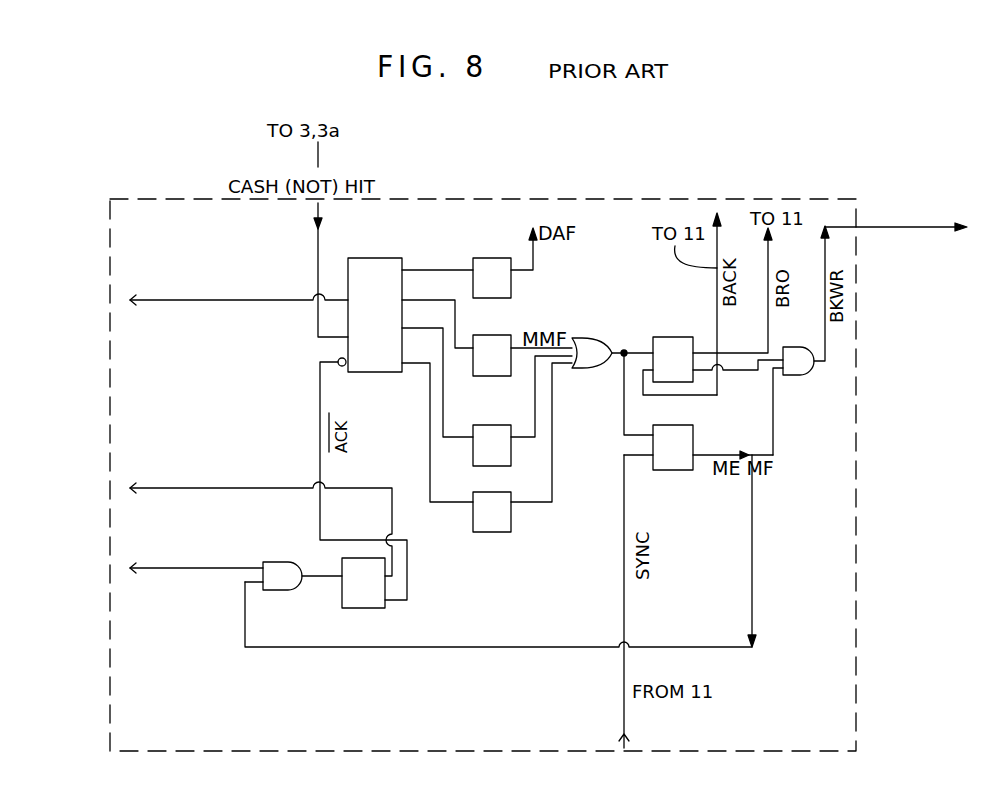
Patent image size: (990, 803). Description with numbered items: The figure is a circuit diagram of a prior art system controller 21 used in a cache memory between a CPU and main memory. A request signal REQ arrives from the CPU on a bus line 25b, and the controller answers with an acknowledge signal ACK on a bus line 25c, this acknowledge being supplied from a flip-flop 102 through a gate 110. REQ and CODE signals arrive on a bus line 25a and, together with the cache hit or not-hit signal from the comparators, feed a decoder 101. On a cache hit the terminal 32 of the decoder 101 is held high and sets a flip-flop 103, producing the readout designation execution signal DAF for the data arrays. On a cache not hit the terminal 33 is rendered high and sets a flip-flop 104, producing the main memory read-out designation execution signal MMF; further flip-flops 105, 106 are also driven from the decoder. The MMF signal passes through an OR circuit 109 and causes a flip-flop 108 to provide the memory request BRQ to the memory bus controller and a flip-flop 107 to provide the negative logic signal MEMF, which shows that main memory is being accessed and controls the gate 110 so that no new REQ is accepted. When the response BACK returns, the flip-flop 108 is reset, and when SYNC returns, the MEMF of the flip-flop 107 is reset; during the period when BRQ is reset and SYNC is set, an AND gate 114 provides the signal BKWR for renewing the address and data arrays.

The system controller 21 is at (763, 199).
The bus line 25a is at (160, 296).
The bus line 25b is at (188, 572).
The bus line 25c is at (180, 486).
The terminal 32 is at (432, 270).
The terminal 33 is at (418, 294).
The decoder 101 is at (372, 258).
The flip-flop 102 is at (386, 588).
The flip-flop 103 is at (490, 258).
The flip-flop 104 is at (498, 336).
The flip-flop 105 is at (486, 426).
The flip-flop 106 is at (512, 516).
The flip-flop 107 is at (695, 439).
The flip-flop 108 is at (672, 338).
The OR circuit 109 is at (594, 338).
The gate 110 is at (283, 562).
The AND gate 114 is at (812, 377).